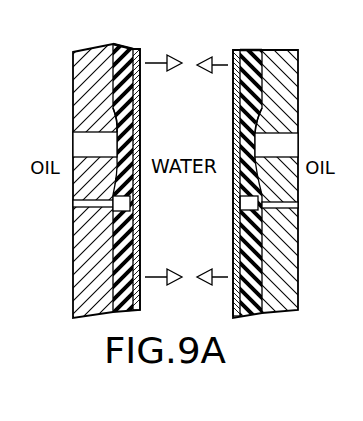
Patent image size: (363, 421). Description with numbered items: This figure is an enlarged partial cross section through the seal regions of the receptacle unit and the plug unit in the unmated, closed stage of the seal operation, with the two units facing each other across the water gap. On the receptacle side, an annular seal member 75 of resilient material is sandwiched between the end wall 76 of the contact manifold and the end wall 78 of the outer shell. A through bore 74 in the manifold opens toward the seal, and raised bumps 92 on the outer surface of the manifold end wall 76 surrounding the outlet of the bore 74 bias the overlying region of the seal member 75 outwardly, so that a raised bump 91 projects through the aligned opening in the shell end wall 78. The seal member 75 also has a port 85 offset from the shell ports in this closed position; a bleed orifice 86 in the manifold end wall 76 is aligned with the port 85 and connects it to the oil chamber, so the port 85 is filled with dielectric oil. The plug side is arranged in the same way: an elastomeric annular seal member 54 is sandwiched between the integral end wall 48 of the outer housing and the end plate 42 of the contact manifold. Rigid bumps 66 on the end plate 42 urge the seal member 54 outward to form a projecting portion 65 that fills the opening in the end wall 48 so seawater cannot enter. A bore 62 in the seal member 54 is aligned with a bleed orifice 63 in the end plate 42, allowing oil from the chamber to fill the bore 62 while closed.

The annular seal member 75 is at (113, 49).
The shell end wall 78 is at (138, 58).
The manifold end wall 76 is at (76, 78).
The raised bump 92 is at (113, 129).
The through bore 74 is at (82, 146).
The raised bump 91 is at (143, 137).
The bleed orifice 86 is at (79, 207).
The port 85 is at (122, 206).
The end wall 48 is at (234, 57).
The annular seal member 54 is at (256, 56).
The end plate 42 is at (283, 70).
The bump 66 is at (258, 126).
The projecting portion 65 is at (232, 135).
The bore 62 is at (241, 204).
The bleed orifice 63 is at (290, 208).